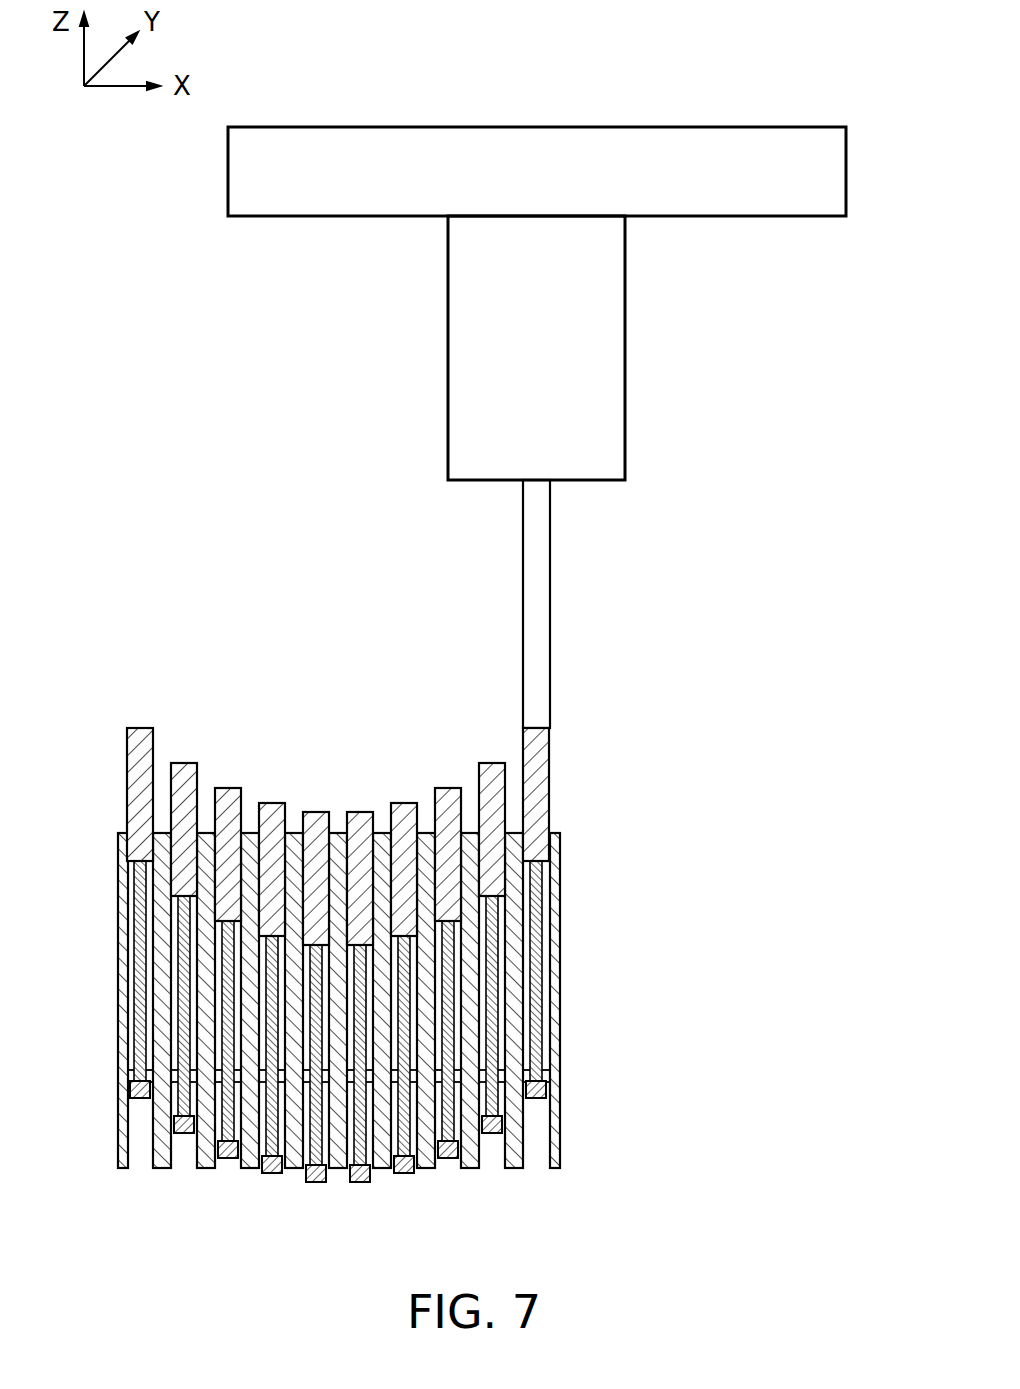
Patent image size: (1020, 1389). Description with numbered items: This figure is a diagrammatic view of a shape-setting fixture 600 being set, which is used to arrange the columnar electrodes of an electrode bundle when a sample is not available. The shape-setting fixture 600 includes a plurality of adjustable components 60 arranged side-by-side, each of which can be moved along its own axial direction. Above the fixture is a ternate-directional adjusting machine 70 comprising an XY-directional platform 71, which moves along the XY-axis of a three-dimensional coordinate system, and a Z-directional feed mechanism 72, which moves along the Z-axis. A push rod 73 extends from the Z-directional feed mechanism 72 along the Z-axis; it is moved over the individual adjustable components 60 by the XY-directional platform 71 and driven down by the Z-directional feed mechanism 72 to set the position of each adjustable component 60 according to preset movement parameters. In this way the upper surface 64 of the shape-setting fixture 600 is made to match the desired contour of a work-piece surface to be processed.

The adjustable component 60 is at (347, 1000).
The shape-setting fixture 600 is at (566, 996).
The upper surface 64 is at (332, 758).
The ternate-directional adjusting machine 70 is at (566, 427).
The XY-directional platform 71 is at (830, 184).
The Z-directional feed mechanism 72 is at (600, 360).
The push rod 73 is at (538, 590).